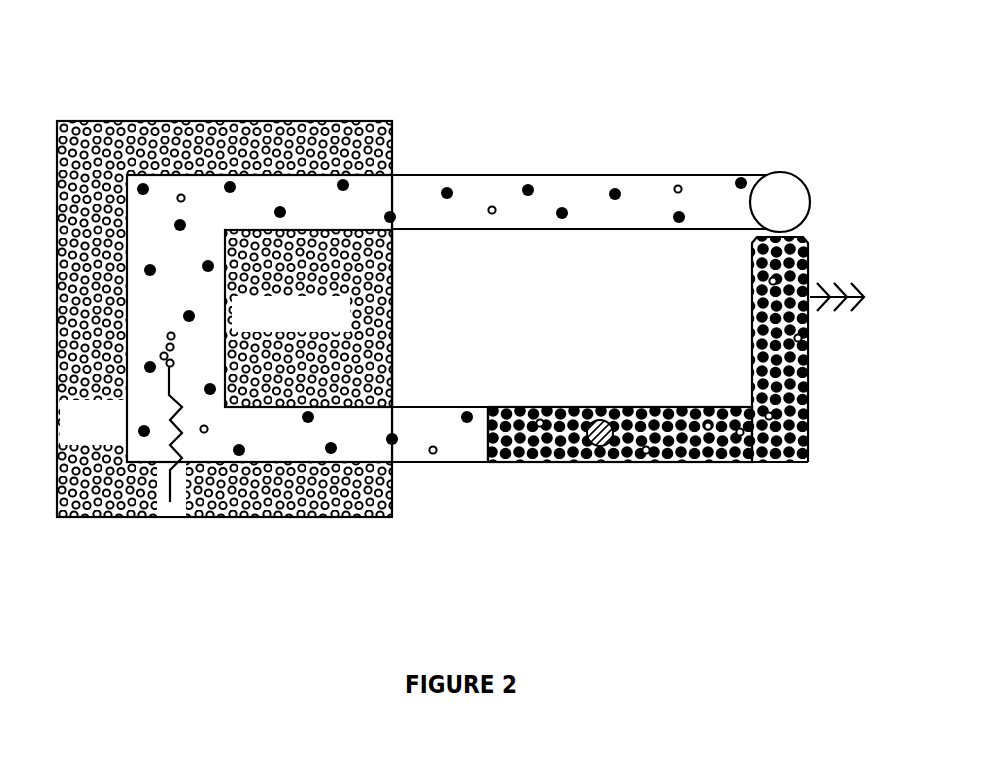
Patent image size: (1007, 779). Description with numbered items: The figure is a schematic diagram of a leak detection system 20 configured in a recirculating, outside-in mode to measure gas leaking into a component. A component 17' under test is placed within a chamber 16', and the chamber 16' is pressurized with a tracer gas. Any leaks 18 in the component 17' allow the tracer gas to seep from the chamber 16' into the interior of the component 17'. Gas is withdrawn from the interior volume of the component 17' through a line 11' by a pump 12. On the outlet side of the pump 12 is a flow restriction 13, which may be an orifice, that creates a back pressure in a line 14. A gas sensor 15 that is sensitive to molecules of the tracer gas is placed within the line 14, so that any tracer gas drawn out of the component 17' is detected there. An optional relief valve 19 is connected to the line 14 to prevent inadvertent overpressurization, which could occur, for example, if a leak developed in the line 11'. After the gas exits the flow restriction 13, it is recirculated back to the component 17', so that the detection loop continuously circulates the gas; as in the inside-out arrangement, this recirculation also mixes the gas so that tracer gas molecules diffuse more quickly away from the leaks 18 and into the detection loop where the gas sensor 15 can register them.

The leak detection system 20 is at (210, 68).
The chamber 16' is at (224, 91).
The line 11' is at (467, 262).
The component 17' is at (308, 318).
The flow restriction 13 is at (502, 393).
The pump 12 is at (809, 162).
The line 14 is at (783, 475).
The gas sensor 15 is at (600, 446).
The leaks 18 is at (155, 433).
The relief valve 19 is at (866, 326).